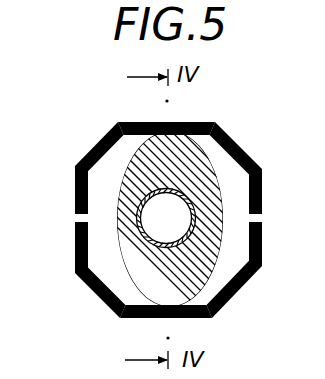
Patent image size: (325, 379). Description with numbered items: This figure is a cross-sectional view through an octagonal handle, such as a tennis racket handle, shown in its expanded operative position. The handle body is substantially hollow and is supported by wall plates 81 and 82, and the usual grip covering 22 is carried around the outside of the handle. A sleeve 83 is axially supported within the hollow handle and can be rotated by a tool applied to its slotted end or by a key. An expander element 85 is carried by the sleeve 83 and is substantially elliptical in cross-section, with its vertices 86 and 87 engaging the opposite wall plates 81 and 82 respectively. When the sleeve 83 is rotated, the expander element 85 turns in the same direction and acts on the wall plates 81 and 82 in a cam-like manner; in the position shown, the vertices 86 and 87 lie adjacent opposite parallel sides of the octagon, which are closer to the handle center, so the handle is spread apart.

The grip covering 22 is at (145, 219).
The wall plate 81 is at (98, 153).
The wall plate 82 is at (92, 270).
The sleeve 83 is at (120, 203).
The expander element 85 is at (208, 151).
The vertex 86 is at (168, 125).
The vertex 87 is at (172, 322).